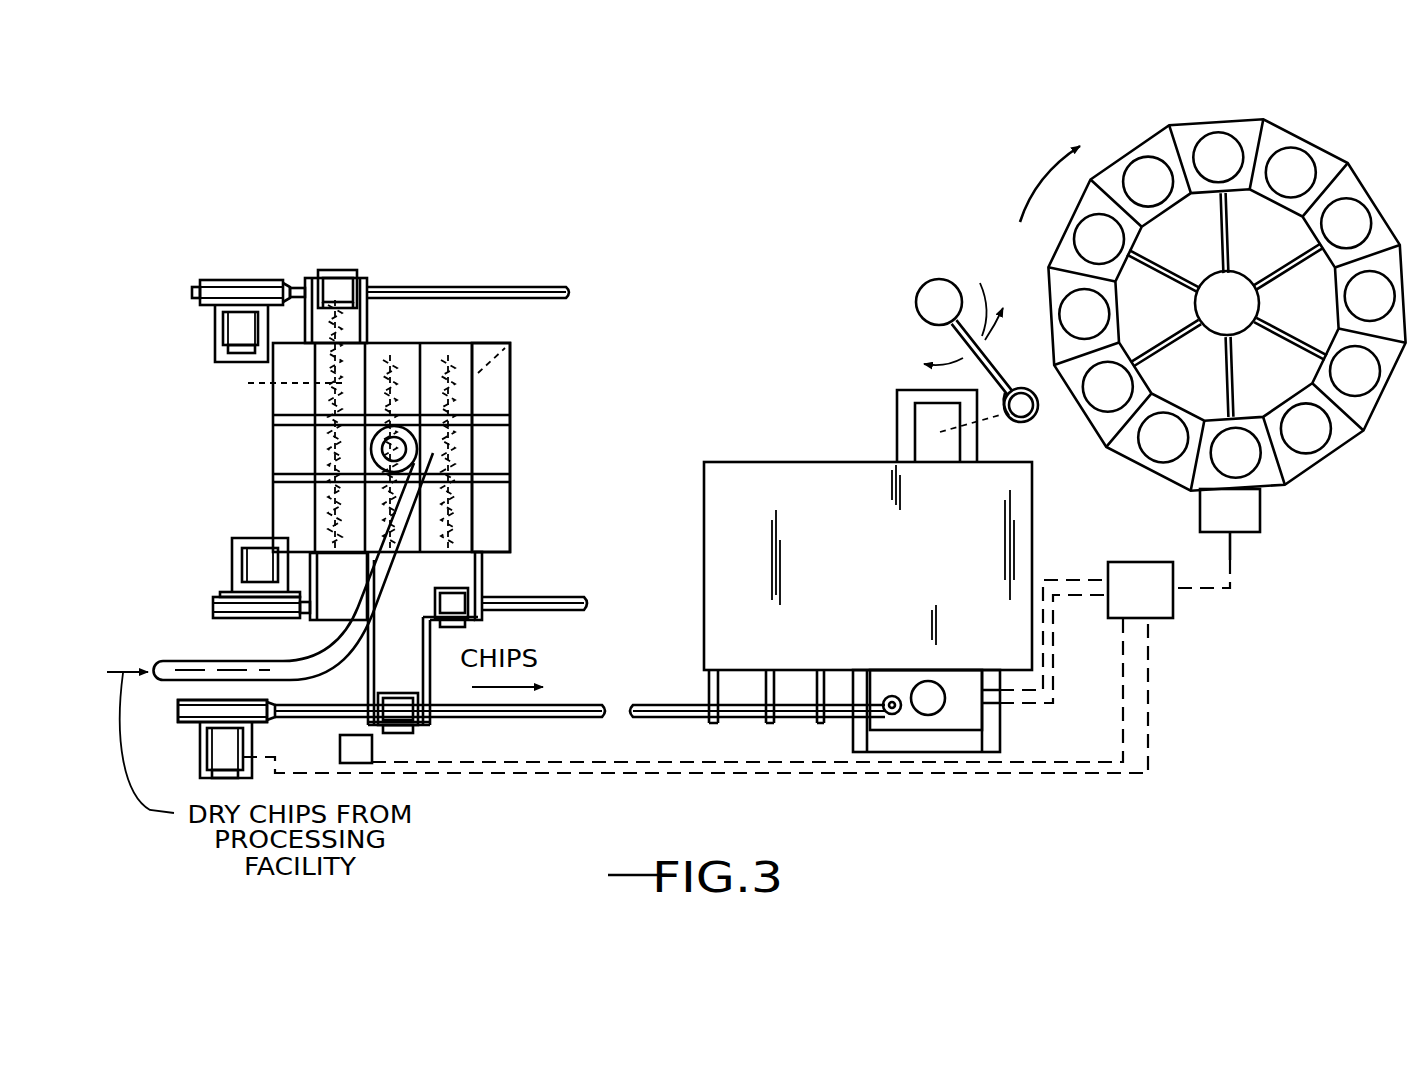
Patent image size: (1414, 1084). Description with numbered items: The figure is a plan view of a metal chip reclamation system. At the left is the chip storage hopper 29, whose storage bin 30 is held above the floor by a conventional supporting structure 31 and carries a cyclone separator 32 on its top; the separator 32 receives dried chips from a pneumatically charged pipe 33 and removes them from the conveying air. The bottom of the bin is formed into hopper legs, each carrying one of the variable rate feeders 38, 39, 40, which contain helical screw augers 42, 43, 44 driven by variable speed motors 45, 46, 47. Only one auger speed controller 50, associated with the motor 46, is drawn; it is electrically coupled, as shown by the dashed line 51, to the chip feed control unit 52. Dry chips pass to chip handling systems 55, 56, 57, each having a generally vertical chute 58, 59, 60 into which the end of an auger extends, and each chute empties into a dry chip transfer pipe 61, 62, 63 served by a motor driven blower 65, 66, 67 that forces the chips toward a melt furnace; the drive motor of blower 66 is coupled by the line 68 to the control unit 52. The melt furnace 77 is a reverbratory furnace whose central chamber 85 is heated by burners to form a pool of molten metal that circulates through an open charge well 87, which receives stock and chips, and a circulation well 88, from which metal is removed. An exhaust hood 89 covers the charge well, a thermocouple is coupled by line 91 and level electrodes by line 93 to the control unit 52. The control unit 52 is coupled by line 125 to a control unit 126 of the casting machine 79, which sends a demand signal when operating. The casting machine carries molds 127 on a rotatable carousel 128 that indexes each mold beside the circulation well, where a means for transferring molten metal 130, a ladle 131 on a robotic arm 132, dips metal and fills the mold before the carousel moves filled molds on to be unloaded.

The chip storage hopper 29 is at (550, 386).
The storage bin 30 is at (495, 438).
The supporting structure 31 is at (370, 447).
The cyclone separator 32 is at (380, 468).
The pneumatically charged pipe 33 is at (195, 668).
The variable rate feeder 38 is at (334, 262).
The variable rate feeder 39 is at (482, 724).
The variable rate feeder 40 is at (488, 633).
The helical screw auger 42 is at (279, 385).
The helical screw auger 43 is at (387, 444).
The helical screw auger 44 is at (505, 350).
The variable speed motor 45 is at (353, 293).
The variable speed motor 46 is at (410, 733).
The variable speed motor 47 is at (480, 621).
The auger speed controller 50 is at (340, 735).
The dashed line 51 is at (613, 758).
The chip feed control unit 52 is at (1157, 602).
The chip handling system 55 is at (233, 276).
The chip handling system 56 is at (228, 566).
The chip handling system 57 is at (192, 733).
The vertical chute 58 is at (358, 317).
The vertical chute 59 is at (386, 683).
The vertical chute 60 is at (478, 574).
The dry chip transfer pipe 61 is at (455, 287).
The dry chip transfer pipe 62 is at (568, 703).
The dry chip transfer pipe 63 is at (585, 597).
The motor driven blower 65 is at (262, 280).
The motor driven blower 66 is at (207, 764).
The motor driven blower 67 is at (285, 620).
The line 68 is at (635, 776).
The melt furnace 77 is at (1040, 512).
The casting machine 79 is at (1033, 218).
The central chamber 85 is at (851, 641).
The charge well 87 is at (855, 737).
The circulation well 88 is at (897, 410).
The exhaust hood 89 is at (970, 715).
The line 91 is at (1070, 580).
The line 93 is at (1057, 697).
The line 125 is at (1232, 562).
The control unit 126 is at (1255, 512).
The mold 127 is at (1117, 236).
The rotatable carousel 128 is at (1148, 392).
The means for transferring molten metal 130 is at (905, 303).
The ladle 131 is at (1025, 422).
The robotic arm 132 is at (968, 305).